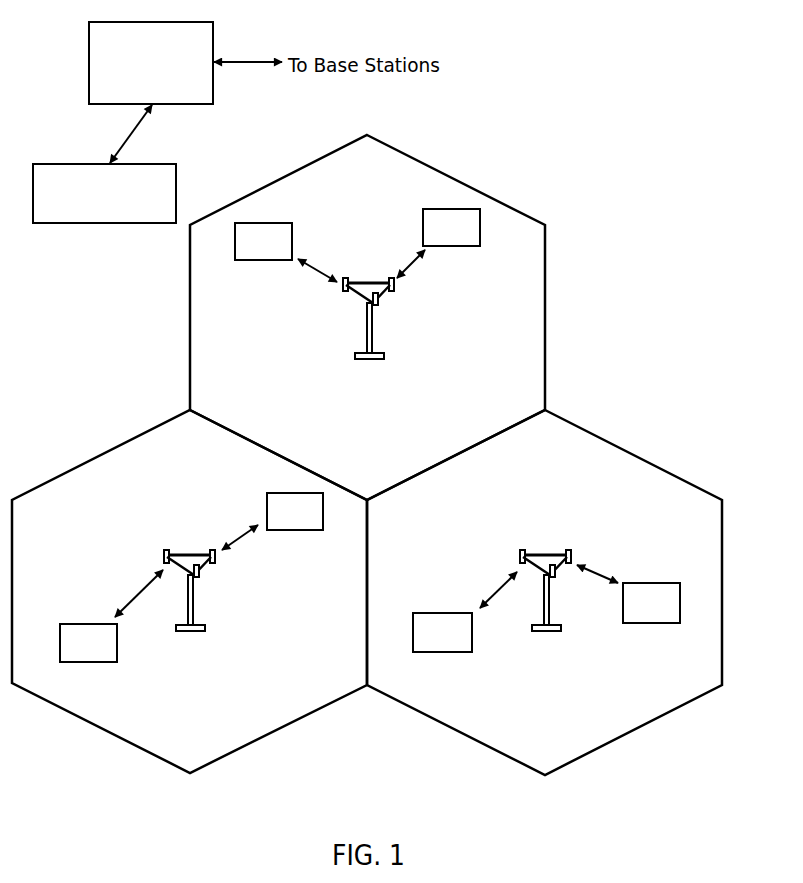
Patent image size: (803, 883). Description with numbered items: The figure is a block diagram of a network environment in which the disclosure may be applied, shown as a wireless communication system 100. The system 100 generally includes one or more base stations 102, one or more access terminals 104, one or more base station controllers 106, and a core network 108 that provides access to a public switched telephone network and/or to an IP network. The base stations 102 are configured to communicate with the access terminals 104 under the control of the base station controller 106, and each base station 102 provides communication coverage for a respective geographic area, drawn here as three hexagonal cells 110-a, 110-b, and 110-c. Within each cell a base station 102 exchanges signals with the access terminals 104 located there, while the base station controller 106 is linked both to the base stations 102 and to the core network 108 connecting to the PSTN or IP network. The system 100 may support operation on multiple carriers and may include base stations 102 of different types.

The wireless communication system 100 is at (677, 134).
The base station 102 is at (370, 283).
The access terminal 104 is at (254, 262).
The base station controller 106 is at (115, 22).
The core network 108 is at (73, 164).
The cell 110-a is at (90, 460).
The cell 110-b is at (440, 172).
The cell 110-c is at (632, 455).